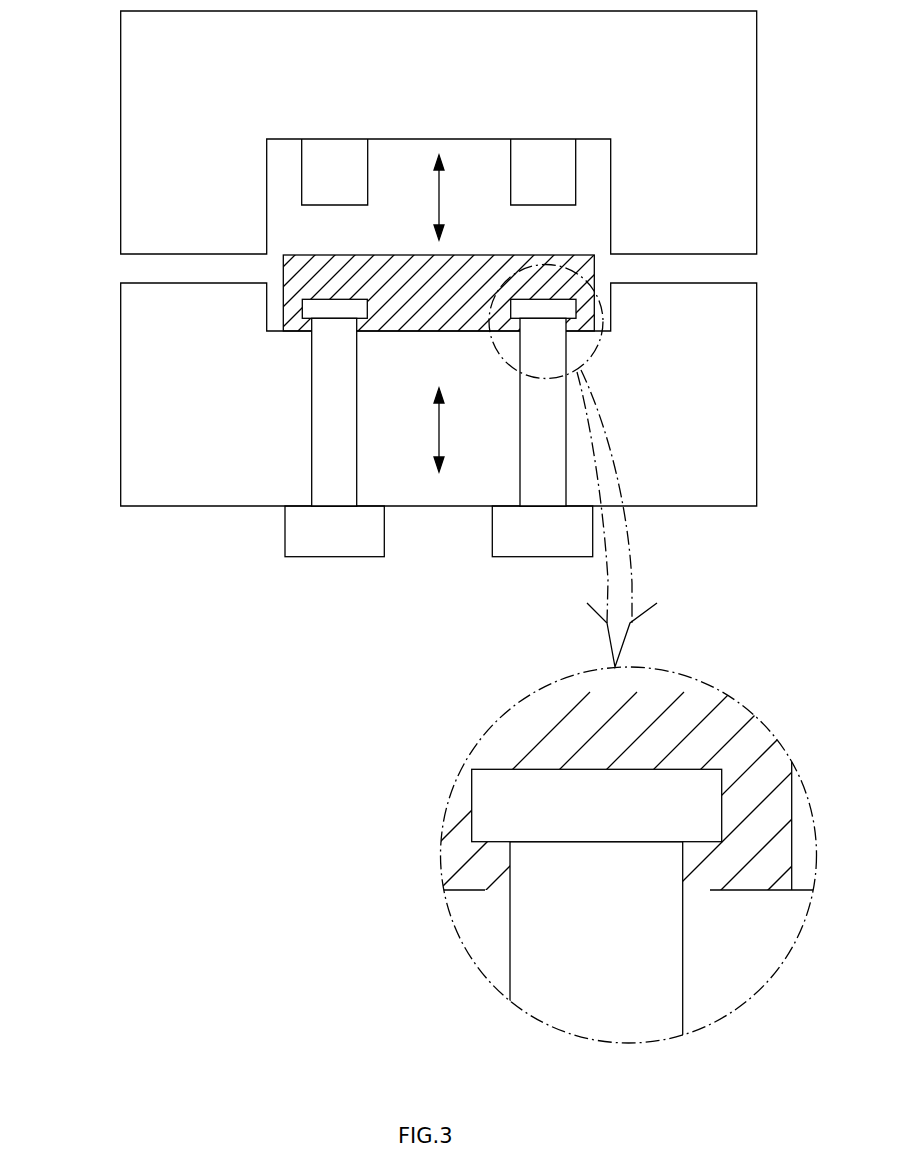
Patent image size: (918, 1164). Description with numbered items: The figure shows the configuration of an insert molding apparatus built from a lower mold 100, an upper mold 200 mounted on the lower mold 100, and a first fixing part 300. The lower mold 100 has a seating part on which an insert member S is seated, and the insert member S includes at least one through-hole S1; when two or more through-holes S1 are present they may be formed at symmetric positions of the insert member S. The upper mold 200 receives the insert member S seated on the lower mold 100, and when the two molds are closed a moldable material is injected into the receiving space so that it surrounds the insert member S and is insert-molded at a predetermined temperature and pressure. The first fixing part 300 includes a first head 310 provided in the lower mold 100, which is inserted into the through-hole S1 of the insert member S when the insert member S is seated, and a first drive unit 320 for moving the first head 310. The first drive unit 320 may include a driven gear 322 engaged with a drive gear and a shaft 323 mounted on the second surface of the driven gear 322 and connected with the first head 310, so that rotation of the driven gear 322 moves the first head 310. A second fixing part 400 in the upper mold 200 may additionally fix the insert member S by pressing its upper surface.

The lower mold 100 is at (121, 468).
The upper mold 200 is at (121, 133).
The first fixing part 300 is at (466, 680).
The first head 310 is at (698, 812).
The first drive unit 320 is at (305, 371).
The driven gear 322 is at (293, 530).
The shaft 323 is at (328, 412).
The second fixing part 400 is at (555, 173).
The insert member S is at (320, 283).
The through-hole S1 is at (690, 890).